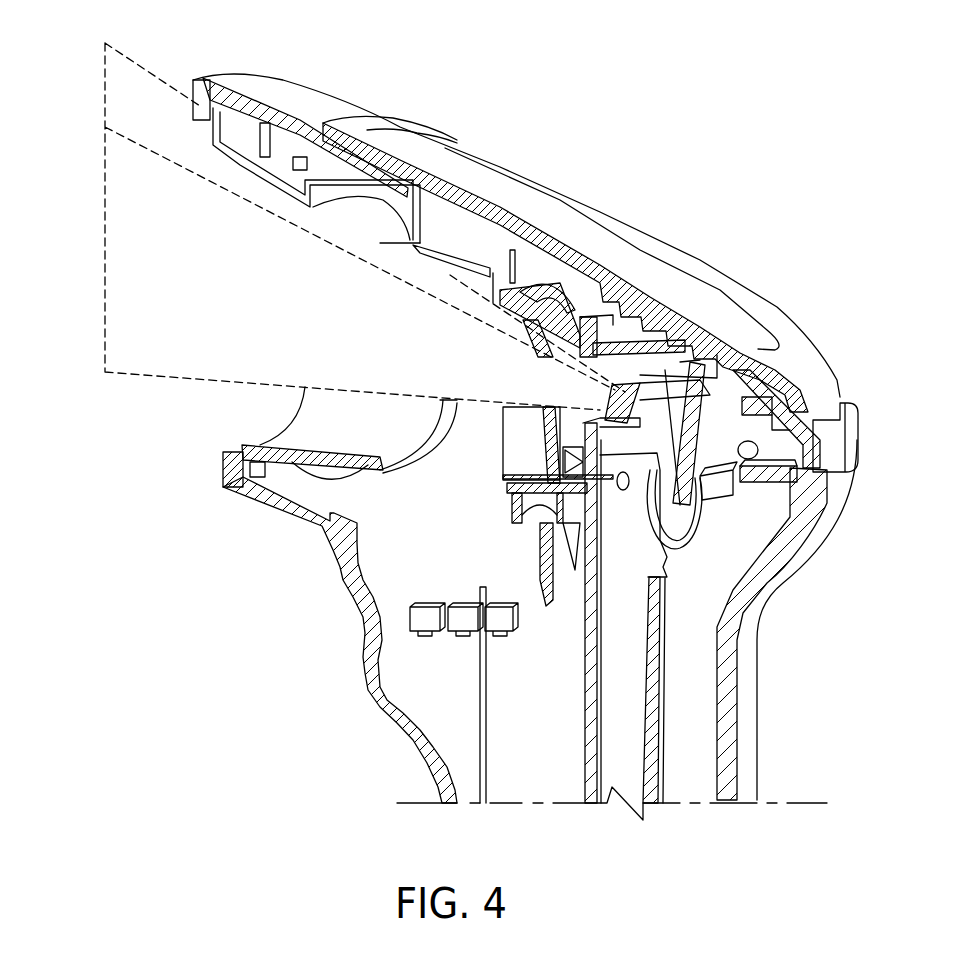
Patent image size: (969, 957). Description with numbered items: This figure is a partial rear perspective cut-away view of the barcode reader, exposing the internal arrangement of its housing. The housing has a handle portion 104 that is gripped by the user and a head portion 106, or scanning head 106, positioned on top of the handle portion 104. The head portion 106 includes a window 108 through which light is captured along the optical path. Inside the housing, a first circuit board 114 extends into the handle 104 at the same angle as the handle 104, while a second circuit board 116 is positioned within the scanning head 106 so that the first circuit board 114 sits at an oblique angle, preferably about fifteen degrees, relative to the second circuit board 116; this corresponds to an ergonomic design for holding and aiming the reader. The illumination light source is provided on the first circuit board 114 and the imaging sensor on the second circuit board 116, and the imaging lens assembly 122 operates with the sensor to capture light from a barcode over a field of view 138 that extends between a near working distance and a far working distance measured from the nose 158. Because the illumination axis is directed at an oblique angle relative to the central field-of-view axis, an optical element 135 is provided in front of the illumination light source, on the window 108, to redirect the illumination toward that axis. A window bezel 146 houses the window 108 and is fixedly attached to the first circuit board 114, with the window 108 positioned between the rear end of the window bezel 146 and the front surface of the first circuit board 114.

The handle portion 104 is at (758, 693).
The head portion 106 is at (640, 227).
The window 108 is at (568, 435).
The first circuit board 114 is at (620, 663).
The second circuit board 116 is at (707, 455).
The imaging lens assembly 122 is at (640, 400).
The optical element 135 is at (570, 463).
The field of view 138 is at (135, 269).
The window bezel 146 is at (567, 320).
The nose 158 is at (192, 100).